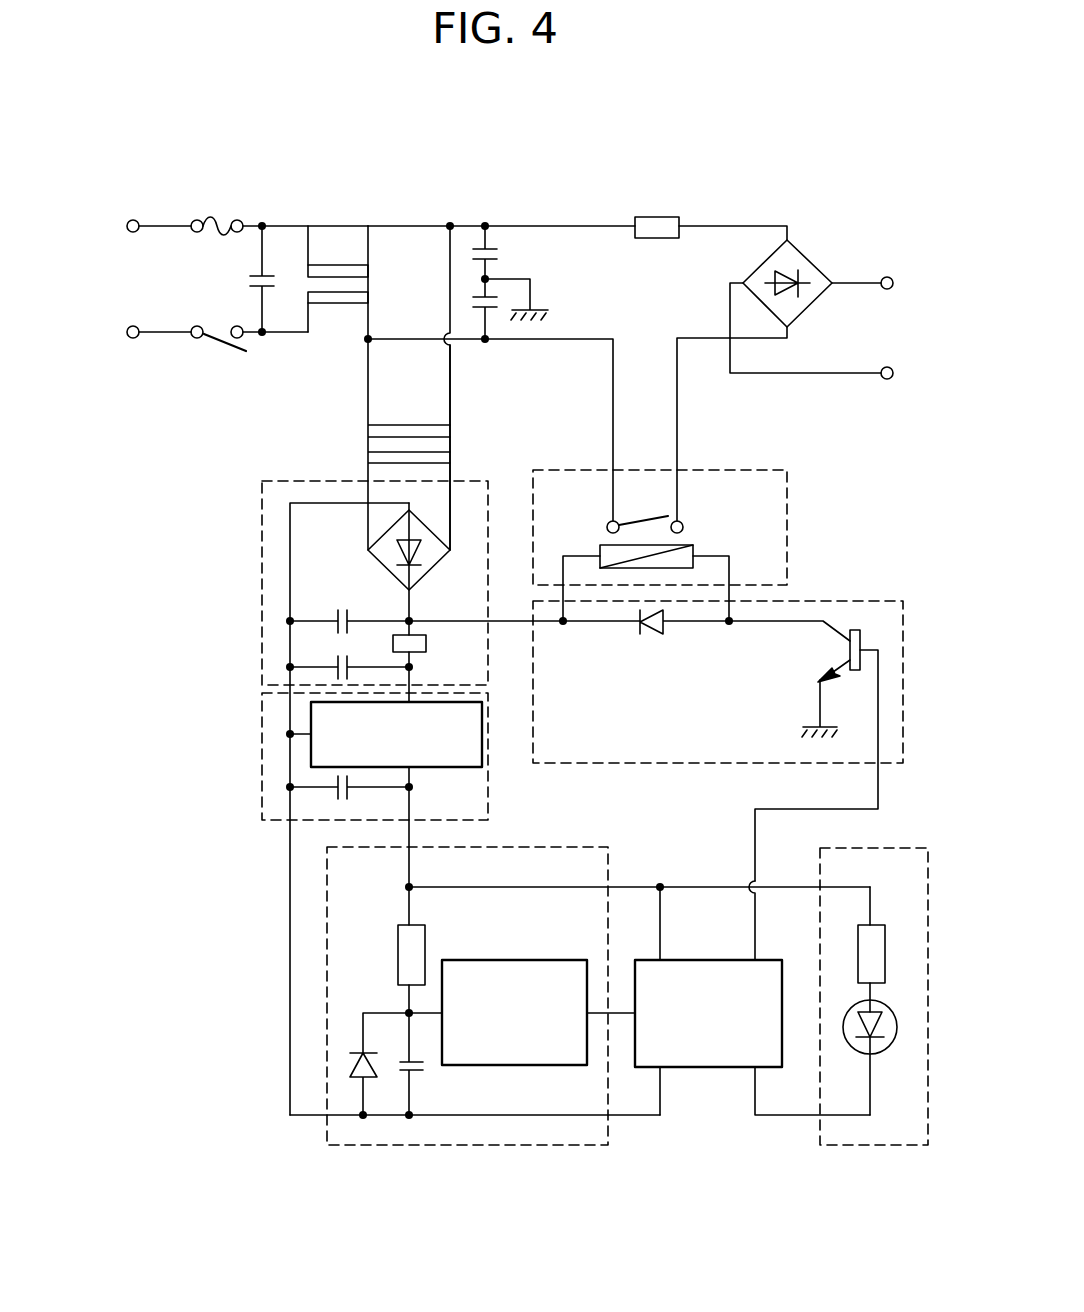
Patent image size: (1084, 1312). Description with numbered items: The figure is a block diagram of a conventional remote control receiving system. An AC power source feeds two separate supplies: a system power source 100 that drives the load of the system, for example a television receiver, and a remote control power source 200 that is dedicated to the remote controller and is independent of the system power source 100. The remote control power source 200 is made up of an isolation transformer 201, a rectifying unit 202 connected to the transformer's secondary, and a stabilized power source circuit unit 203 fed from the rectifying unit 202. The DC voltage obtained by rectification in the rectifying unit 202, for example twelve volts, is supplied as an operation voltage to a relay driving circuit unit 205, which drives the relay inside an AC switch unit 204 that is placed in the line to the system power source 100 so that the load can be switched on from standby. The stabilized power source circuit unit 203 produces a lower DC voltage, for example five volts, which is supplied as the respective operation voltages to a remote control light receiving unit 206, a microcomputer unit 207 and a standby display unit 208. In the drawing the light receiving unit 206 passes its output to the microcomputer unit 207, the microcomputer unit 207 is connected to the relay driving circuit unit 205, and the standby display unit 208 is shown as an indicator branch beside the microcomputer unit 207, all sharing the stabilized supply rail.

The system power source 100 is at (570, 212).
The remote control power source 200 is at (233, 474).
The isolation transformer 201 is at (466, 438).
The rectifying unit 202 is at (262, 651).
The stabilized power source circuit unit 203 is at (262, 773).
The AC switch unit 204 is at (755, 470).
The relay driving circuit unit 205 is at (870, 600).
The remote control light receiving unit 206 is at (556, 1146).
The microcomputer unit 207 is at (703, 1070).
The standby display unit 208 is at (883, 1146).